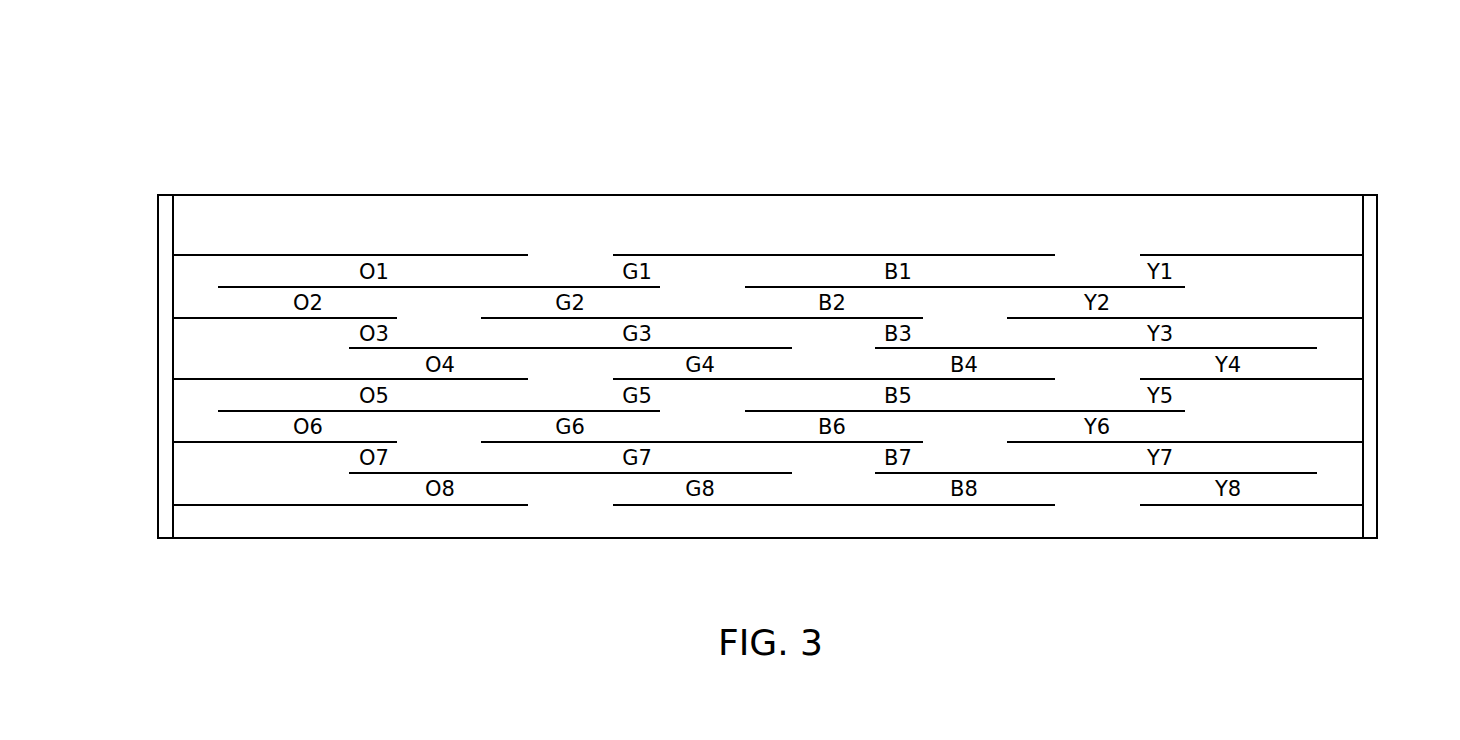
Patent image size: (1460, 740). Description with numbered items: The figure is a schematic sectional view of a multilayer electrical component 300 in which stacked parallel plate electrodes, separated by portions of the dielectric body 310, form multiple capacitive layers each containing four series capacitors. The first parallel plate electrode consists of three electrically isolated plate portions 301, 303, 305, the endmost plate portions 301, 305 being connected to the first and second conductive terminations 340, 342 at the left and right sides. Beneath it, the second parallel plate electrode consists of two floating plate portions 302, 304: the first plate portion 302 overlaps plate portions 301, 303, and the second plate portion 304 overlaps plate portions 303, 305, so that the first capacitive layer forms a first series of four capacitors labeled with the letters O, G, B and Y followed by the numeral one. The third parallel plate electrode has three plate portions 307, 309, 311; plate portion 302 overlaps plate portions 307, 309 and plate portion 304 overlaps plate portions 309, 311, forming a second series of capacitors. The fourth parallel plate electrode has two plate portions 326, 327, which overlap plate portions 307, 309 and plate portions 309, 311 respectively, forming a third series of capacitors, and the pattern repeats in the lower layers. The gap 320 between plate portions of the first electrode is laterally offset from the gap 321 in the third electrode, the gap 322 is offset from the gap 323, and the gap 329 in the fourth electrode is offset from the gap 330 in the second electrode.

The multilayer electrical component 300 is at (208, 82).
The first plate portion of the first parallel plate electrode 301 is at (277, 255).
The first plate portion of the second parallel plate electrode 302 is at (563, 286).
The second plate portion of the first parallel plate electrode 303 is at (732, 255).
The second plate portion of the second parallel plate electrode 304 is at (1088, 286).
The third plate portion of the first parallel plate electrode 305 is at (1250, 255).
The first plate portion of the third parallel plate electrode 307 is at (283, 319).
The second plate portion of the third parallel plate electrode 309 is at (560, 319).
The dielectric body 310 is at (1165, 518).
The third plate portion of the third parallel plate electrode 311 is at (1288, 317).
The gap 320 is at (598, 272).
The gap 321 is at (440, 308).
The gap 322 is at (1123, 272).
The gap 323 is at (968, 317).
The first plate portion of the fourth parallel plate electrode 326 is at (670, 349).
The second plate portion of the fourth parallel plate electrode 327 is at (1097, 350).
The gap 329 is at (867, 350).
The gap 330 is at (678, 280).
The first conductive termination 340 is at (158, 368).
The second conductive termination 342 is at (1378, 297).